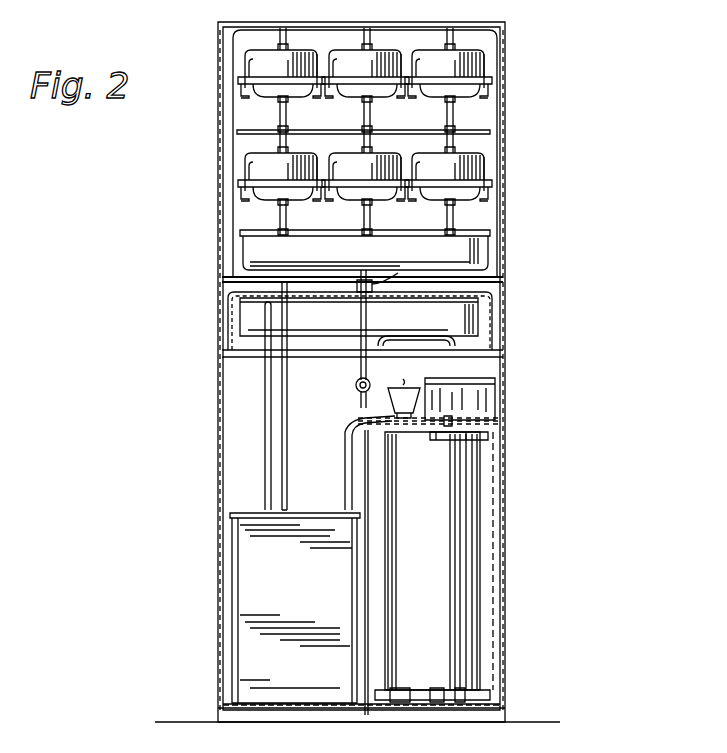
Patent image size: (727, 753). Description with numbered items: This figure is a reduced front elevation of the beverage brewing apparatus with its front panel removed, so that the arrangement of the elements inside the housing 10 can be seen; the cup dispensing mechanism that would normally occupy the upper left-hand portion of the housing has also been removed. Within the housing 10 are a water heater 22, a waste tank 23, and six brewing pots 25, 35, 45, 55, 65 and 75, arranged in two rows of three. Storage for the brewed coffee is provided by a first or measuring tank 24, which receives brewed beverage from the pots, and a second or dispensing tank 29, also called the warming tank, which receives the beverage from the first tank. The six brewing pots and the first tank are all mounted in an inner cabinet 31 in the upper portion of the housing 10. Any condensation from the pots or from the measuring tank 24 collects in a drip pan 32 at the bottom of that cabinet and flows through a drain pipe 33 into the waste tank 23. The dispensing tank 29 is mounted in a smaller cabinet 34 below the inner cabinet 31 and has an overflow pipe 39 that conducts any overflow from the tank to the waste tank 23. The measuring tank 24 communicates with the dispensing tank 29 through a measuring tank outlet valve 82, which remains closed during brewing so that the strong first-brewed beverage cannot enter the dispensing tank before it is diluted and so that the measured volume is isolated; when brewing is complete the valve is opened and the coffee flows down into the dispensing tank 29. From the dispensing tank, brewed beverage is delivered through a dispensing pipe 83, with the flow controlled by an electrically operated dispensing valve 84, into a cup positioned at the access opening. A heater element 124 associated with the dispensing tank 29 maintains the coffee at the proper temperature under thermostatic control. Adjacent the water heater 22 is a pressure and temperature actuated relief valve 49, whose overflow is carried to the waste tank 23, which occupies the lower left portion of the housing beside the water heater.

The housing 10 is at (220, 568).
The water heater 22 is at (475, 572).
The waste tank 23 is at (233, 628).
The first or measuring tank 24 is at (252, 258).
The brewing pot 25 is at (258, 57).
The second or dispensing tank 29 is at (245, 312).
The inner cabinet 31 is at (232, 119).
The drip pan 32 is at (490, 273).
The drain pipe 33 is at (288, 393).
The smaller cabinet 34 is at (232, 330).
The brewing pot 35 is at (345, 54).
The overflow pipe 39 is at (265, 428).
The brewing pot 45 is at (478, 57).
The pressure and temperature actuated relief valve 49 is at (404, 389).
The brewing pot 55 is at (258, 165).
The brewing pot 65 is at (338, 160).
The brewing pot 75 is at (480, 165).
The measuring tank outlet valve 82 is at (392, 315).
The dispensing pipe 83 is at (360, 370).
The dispensing valve 84 is at (358, 398).
The heater element 124 is at (487, 368).